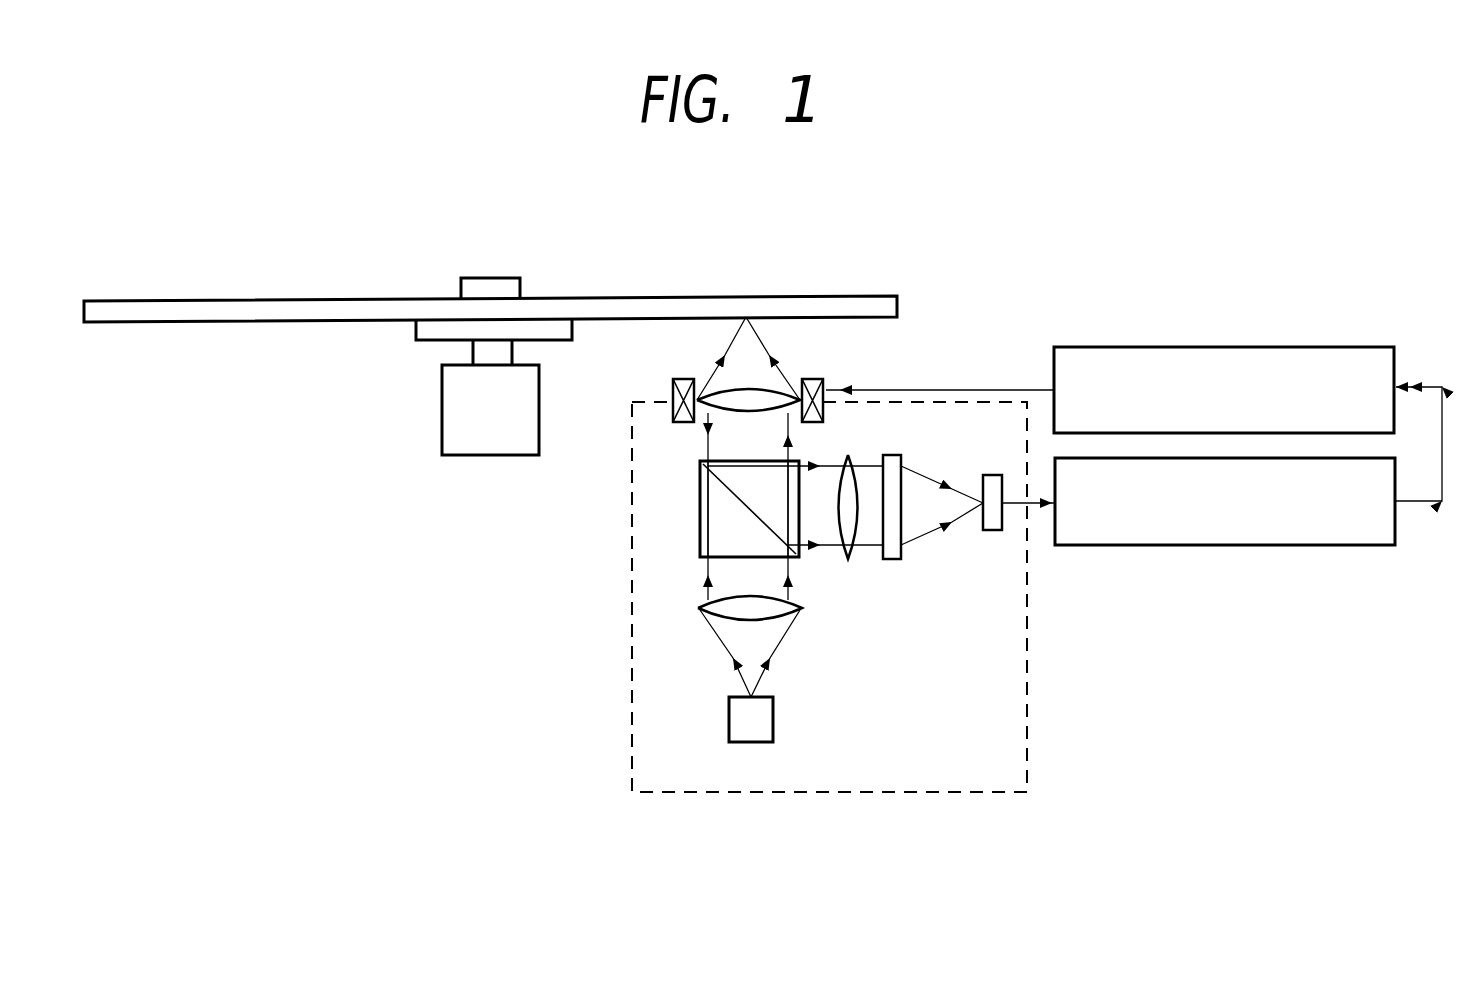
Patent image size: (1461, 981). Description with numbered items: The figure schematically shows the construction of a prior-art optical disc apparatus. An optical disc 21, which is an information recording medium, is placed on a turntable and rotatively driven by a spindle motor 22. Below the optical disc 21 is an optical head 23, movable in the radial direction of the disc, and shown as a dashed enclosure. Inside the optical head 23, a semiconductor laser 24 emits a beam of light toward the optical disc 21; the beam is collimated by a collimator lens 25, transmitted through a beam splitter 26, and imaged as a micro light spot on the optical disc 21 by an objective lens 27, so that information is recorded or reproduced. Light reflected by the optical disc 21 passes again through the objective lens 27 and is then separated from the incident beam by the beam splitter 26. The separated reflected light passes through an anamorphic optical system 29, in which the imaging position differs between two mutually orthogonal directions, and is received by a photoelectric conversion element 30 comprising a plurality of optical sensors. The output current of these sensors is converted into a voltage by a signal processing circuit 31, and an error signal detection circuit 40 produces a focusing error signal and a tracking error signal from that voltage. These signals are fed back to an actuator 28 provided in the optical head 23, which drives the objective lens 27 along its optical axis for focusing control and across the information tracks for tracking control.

The optical disc 21 is at (832, 295).
The spindle motor 22 is at (540, 408).
The optical head 23 is at (1027, 713).
The semiconductor laser 24 is at (774, 717).
The collimator lens 25 is at (702, 606).
The beam splitter 26 is at (700, 495).
The objective lens 27 is at (792, 394).
The actuator 28 is at (683, 378).
The anamorphic optical system 29 is at (912, 577).
The photoelectric conversion element 30 is at (1000, 533).
The signal processing circuit 31 is at (1125, 547).
The error signal detection circuit 40 is at (1322, 346).